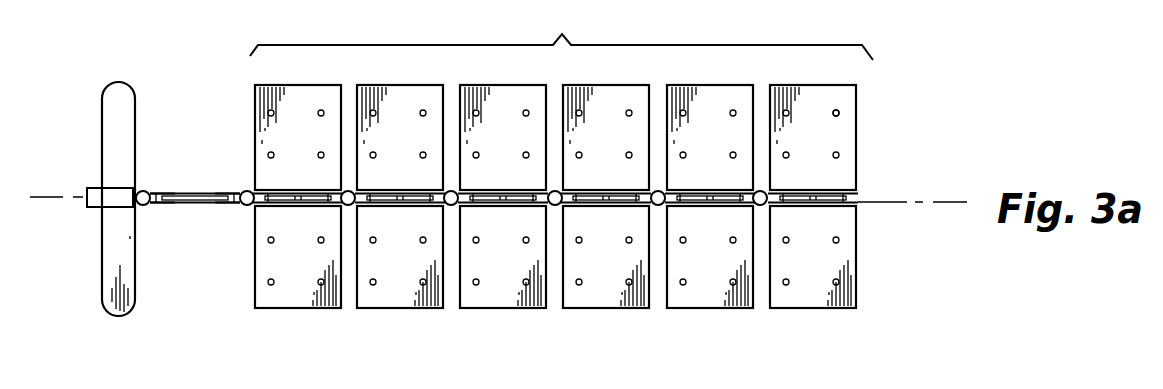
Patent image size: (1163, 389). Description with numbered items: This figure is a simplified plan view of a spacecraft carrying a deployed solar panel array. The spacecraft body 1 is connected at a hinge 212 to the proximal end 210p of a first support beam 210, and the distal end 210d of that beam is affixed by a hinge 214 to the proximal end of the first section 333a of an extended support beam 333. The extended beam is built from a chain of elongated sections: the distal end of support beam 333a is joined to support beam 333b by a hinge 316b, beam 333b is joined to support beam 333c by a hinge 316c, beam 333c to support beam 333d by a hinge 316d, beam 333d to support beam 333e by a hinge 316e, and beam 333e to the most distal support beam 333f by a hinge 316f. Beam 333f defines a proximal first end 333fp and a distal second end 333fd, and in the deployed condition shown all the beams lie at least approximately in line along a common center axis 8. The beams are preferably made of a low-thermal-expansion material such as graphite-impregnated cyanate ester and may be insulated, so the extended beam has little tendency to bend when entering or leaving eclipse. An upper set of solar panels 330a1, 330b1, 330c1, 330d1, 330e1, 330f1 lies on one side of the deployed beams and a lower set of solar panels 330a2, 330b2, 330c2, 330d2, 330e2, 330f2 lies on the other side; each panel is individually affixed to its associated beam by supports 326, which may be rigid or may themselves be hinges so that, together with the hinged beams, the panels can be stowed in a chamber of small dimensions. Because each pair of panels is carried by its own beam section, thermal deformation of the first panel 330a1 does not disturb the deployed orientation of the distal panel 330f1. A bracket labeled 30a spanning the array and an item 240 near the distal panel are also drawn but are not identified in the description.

The spacecraft body 1 is at (100, 146).
The hinge 212 is at (145, 191).
The hinge 214 is at (247, 191).
The first support beam 210 is at (194, 204).
The proximal end of first support beam 210p is at (148, 205).
The distal end of first support beam 210d is at (245, 205).
The extended support beam 333 is at (241, 290).
The solar array wing 30a is at (561, 30).
The solar panel 330a1 is at (276, 86).
The solar panel 330a2 is at (276, 307).
The solar panel 330b1 is at (378, 86).
The solar panel 330b2 is at (378, 307).
The solar panel 330c1 is at (481, 86).
The solar panel 330c2 is at (481, 307).
The solar panel 330d1 is at (584, 86).
The solar panel 330d2 is at (584, 307).
The solar panel 330e1 is at (688, 86).
The solar panel 330e2 is at (688, 307).
The solar panel 330f1 is at (791, 86).
The solar panel 330f2 is at (791, 307).
The hinge 316b is at (348, 191).
The hinge 316c is at (453, 191).
The hinge 316d is at (556, 191).
The hinge 316e is at (656, 191).
The hinge 316f is at (762, 191).
The support beam 333a is at (262, 206).
The support beam 333b is at (448, 191).
The support beam 333c is at (478, 210).
The support beam 333d is at (583, 210).
The support beam 333e is at (730, 191).
The support beam 333f is at (790, 210).
The first end of second elongated beam 333fp is at (762, 206).
The second end of second elongated beam 333fd is at (856, 198).
The support 326 is at (332, 190).
The panel hold-down hole 240 is at (839, 113).
The center axis 8 is at (960, 206).